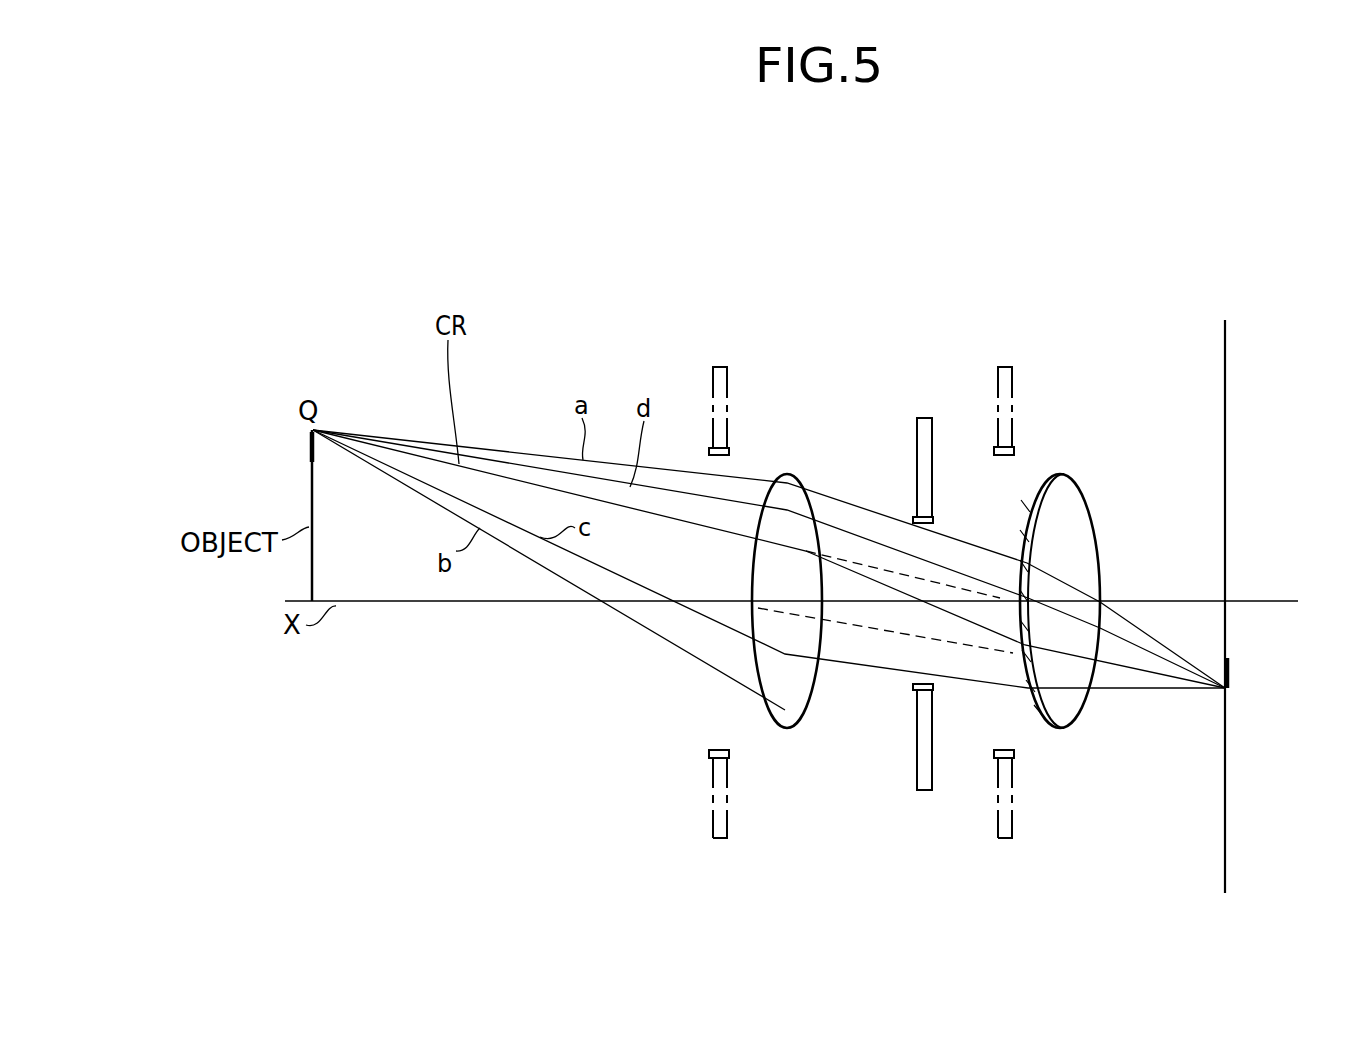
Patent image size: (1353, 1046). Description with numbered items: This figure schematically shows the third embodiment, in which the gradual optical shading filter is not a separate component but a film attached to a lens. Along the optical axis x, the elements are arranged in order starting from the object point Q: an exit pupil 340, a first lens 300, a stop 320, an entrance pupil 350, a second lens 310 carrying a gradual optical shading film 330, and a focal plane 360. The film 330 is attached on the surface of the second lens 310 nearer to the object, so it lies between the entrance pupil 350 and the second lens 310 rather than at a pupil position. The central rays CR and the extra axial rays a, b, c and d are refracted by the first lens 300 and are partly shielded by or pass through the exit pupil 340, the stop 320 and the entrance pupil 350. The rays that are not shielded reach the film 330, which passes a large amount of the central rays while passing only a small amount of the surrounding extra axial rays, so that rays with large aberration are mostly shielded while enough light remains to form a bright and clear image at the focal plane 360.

The first lens 300 is at (787, 730).
The second lens 310 is at (1083, 716).
The stop 320 is at (928, 418).
The gradual optical shading film 330 is at (1040, 738).
The exit pupil 340 is at (727, 390).
The entrance pupil 350 is at (1012, 385).
The focal plane 360 is at (1226, 855).